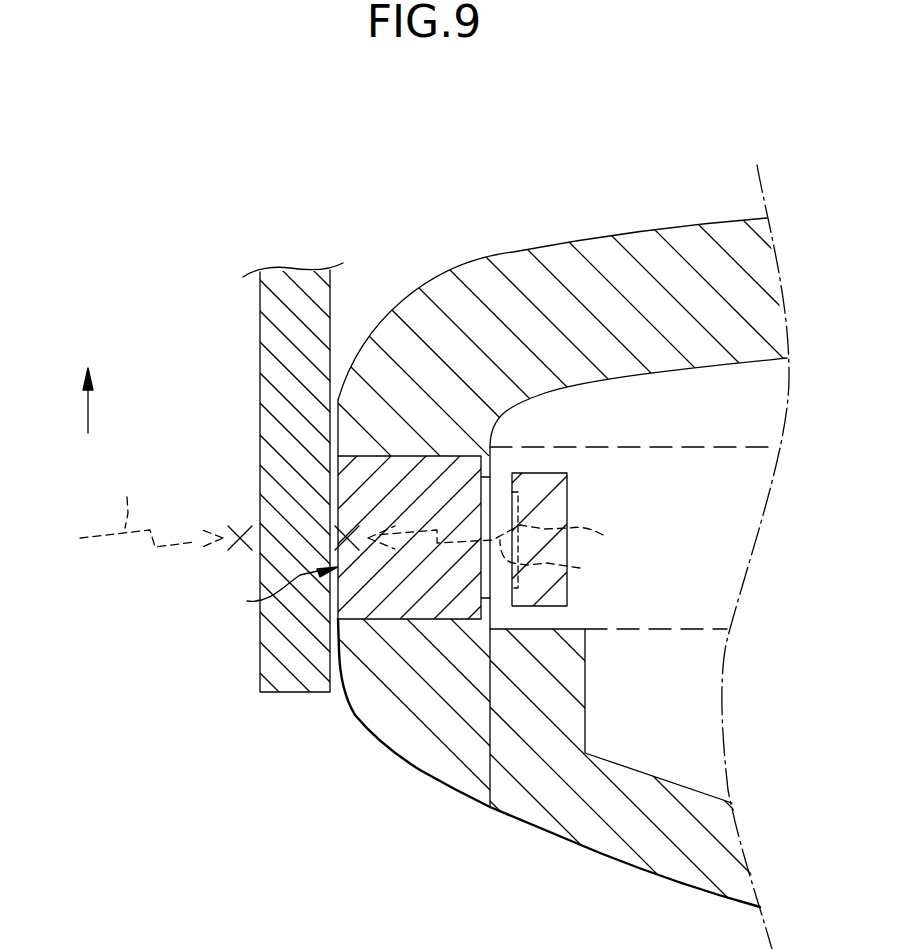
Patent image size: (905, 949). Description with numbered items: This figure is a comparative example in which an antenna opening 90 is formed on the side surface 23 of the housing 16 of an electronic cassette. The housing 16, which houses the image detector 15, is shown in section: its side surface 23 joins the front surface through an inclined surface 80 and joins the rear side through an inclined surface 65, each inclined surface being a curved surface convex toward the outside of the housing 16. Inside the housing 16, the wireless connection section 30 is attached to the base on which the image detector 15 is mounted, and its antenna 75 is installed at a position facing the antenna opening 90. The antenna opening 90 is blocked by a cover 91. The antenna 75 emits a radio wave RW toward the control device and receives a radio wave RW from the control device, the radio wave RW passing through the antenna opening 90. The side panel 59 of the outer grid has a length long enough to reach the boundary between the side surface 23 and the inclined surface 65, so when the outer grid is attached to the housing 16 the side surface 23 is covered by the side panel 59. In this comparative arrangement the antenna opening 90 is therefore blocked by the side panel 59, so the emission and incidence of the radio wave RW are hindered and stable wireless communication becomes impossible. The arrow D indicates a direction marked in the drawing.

The housing 16 is at (475, 240).
The inclined surface 80 is at (417, 289).
The side panel 59 is at (265, 305).
The side surface 23 is at (340, 436).
The image detector 15 is at (540, 447).
The wireless connection section 30 is at (582, 485).
The antenna 75 is at (499, 536).
The antenna opening 90 is at (276, 592).
The cover 91 is at (368, 607).
The inclined surface 65 is at (465, 797).
The radio wave RW is at (348, 527).
The direction D is at (88, 385).